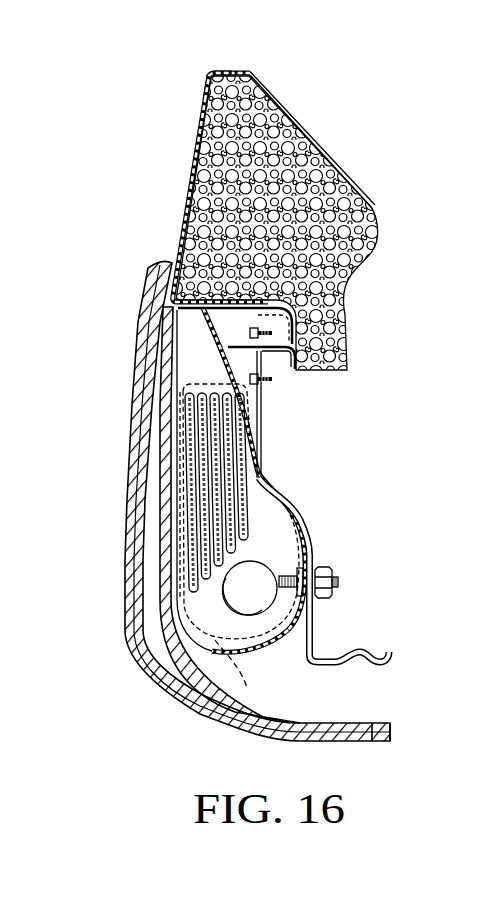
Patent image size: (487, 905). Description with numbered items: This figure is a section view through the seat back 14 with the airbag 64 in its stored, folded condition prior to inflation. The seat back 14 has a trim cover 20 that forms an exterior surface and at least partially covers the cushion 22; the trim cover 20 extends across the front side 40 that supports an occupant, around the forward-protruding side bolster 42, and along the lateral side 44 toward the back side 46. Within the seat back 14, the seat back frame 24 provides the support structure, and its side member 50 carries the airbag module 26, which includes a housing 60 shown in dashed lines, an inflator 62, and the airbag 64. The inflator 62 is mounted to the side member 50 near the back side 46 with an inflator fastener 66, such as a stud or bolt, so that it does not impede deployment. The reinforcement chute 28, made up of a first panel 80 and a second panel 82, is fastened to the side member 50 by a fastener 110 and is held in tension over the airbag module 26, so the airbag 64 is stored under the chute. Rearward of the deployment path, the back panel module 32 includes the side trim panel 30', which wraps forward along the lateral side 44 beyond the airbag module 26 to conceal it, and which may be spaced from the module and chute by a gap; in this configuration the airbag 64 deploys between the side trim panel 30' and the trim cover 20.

The seat back 14 is at (364, 110).
The trim cover 20 is at (374, 195).
The cushion 22 is at (353, 342).
The seat back frame 24 is at (294, 479).
The seat back side member 50 is at (304, 540).
The airbag module 26 is at (247, 651).
The reinforcement chute 28 is at (170, 618).
The side trim panel 30' is at (223, 501).
The back panel module 32 is at (182, 721).
The front side 40 is at (273, 85).
The side bolster 42 is at (277, 147).
The lateral side 44 is at (200, 87).
The back side 46 is at (360, 740).
The housing 60 is at (239, 678).
The inflator 62 is at (263, 605).
The airbag 64 is at (237, 470).
The inflator fastener 66 is at (338, 582).
The first panel 80 is at (163, 375).
The second panel 82 is at (264, 350).
The fastener 110 is at (251, 333).